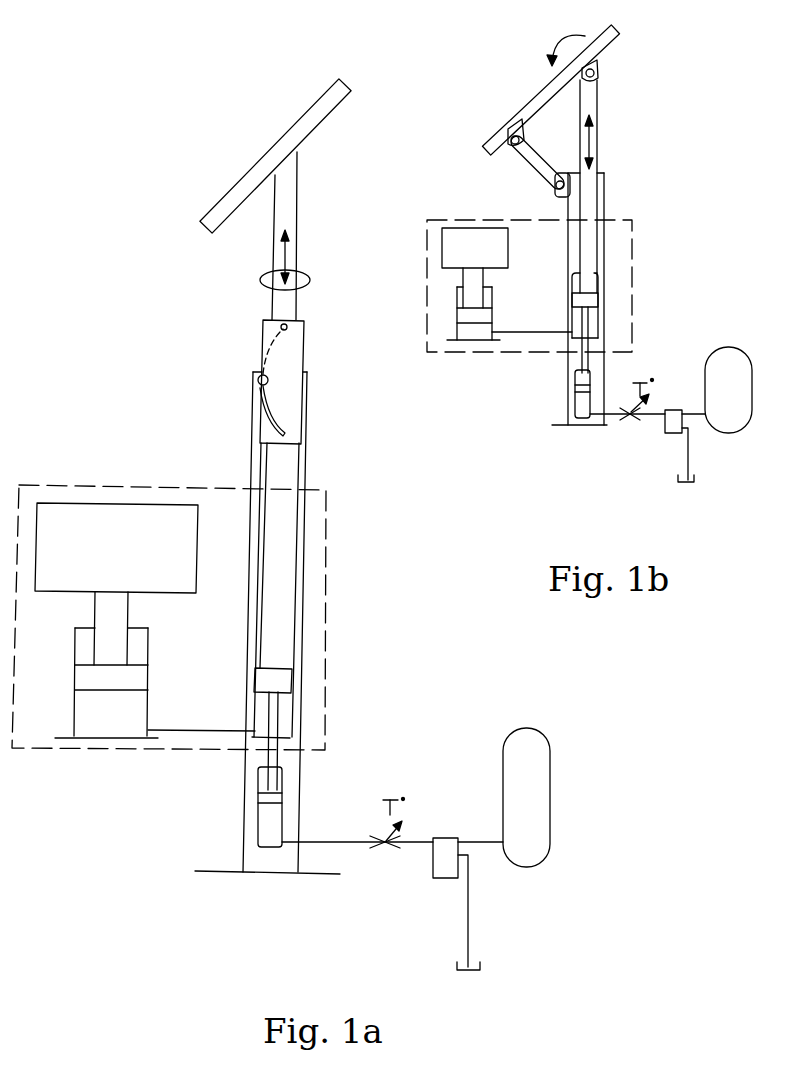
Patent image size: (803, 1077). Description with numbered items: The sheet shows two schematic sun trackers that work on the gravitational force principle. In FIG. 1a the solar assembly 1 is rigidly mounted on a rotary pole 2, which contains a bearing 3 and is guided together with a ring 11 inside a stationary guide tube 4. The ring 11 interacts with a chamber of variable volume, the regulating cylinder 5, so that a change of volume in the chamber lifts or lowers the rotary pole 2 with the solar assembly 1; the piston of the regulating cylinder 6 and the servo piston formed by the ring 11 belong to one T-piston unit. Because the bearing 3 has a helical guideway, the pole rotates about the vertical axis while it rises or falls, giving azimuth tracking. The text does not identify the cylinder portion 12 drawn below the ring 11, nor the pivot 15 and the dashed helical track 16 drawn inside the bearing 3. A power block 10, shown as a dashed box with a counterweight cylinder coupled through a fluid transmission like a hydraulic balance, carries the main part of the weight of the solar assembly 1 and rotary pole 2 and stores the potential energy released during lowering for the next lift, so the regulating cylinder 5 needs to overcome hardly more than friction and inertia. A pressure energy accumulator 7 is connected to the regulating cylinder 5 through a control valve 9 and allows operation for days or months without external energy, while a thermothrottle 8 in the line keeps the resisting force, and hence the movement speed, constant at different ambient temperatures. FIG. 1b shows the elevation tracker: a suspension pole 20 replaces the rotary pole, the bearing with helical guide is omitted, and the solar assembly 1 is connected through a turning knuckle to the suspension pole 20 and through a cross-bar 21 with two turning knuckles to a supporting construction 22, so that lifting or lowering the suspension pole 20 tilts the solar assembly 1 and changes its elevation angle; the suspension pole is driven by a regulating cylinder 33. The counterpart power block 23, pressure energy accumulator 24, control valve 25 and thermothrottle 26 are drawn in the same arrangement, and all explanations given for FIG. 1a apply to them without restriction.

In FIG. 1A, the solar assembly 1 is at (257, 172).
In FIG. 1B, the solar assembly 1 is at (542, 95).
In FIG. 1A, the rotary pole 2 is at (288, 218).
In FIG. 1A, the bearing 3 is at (292, 352).
In FIG. 1A, the stationary guide tube 4 is at (305, 462).
In FIG. 1A, the chamber of variable volume (regulating cylinder) 5 is at (270, 833).
In FIG. 1A, the piston of the regulating cylinder 6 is at (270, 797).
In FIG. 1A, the pressure energy accumulator 7 is at (532, 755).
In FIG. 1A, the thermothrottle 8 is at (383, 853).
In FIG. 1A, the control valve 9 is at (447, 848).
In FIG. 1A, the power block 10 is at (93, 482).
In FIG. 1A, the ring (servo piston) 11 is at (285, 680).
In FIG. 1A, the cylinder 12 is at (285, 713).
In FIG. 1A, the pivot with lever 15 is at (258, 380).
In FIG. 1A, the stop / guide track 16 is at (277, 330).
In FIG. 1B, the suspension pole 20 is at (588, 98).
In FIG. 1B, the cross-bar 21 is at (533, 162).
In FIG. 1B, the supporting construction 22 is at (603, 192).
In FIG. 1B, the control unit 23 is at (637, 270).
In FIG. 1B, the fluid reservoir 24 is at (723, 358).
In FIG. 1B, the pump 25 is at (675, 413).
In FIG. 1B, the thermostatic valve 26 is at (633, 427).
In FIG. 1B, the regulating cylinder 33 is at (583, 402).